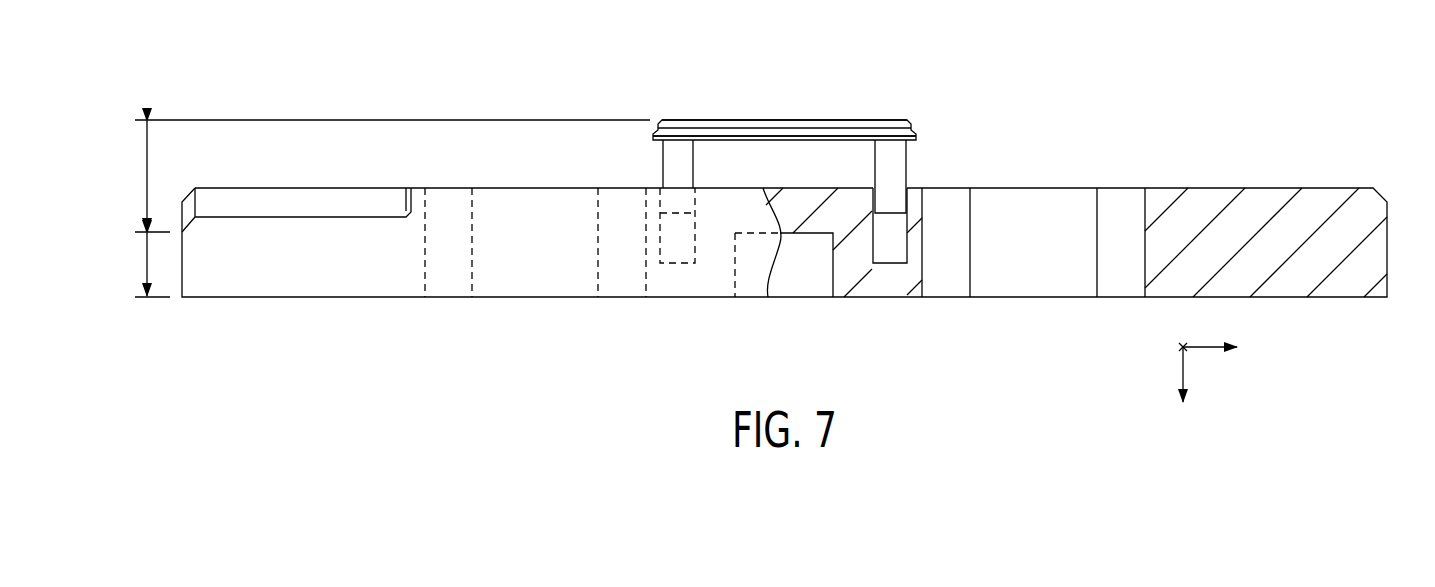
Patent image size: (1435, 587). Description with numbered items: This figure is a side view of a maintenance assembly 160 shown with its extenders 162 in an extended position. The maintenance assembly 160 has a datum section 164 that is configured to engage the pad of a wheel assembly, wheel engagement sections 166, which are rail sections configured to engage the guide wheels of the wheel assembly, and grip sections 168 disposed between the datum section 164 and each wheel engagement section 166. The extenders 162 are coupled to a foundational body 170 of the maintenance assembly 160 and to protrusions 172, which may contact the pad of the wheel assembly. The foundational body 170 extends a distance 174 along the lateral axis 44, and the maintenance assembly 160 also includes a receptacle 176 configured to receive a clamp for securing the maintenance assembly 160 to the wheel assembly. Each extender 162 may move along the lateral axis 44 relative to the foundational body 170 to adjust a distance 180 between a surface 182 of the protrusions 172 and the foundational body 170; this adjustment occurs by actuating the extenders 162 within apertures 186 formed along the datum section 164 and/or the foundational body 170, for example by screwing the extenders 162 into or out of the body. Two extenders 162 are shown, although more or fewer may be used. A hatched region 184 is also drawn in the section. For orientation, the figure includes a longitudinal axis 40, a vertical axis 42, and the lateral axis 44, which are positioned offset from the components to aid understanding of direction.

The maintenance assembly 160 is at (1332, 73).
The extenders 162 is at (907, 176).
The datum section 164 is at (932, 130).
The wheel engagement sections 166 is at (260, 95).
The grip sections 168 is at (475, 93).
The foundational body 170 is at (303, 297).
The protrusions 172 is at (783, 120).
The distance 174 is at (146, 263).
The receptacle 176 is at (735, 257).
The distance 180 is at (390, 176).
The surface 182 is at (850, 120).
The hatched section 184 is at (915, 187).
The apertures 186 is at (695, 225).
The longitudinal axis 40 is at (1203, 345).
The vertical axis 42 is at (1181, 348).
The lateral axis 44 is at (1183, 366).